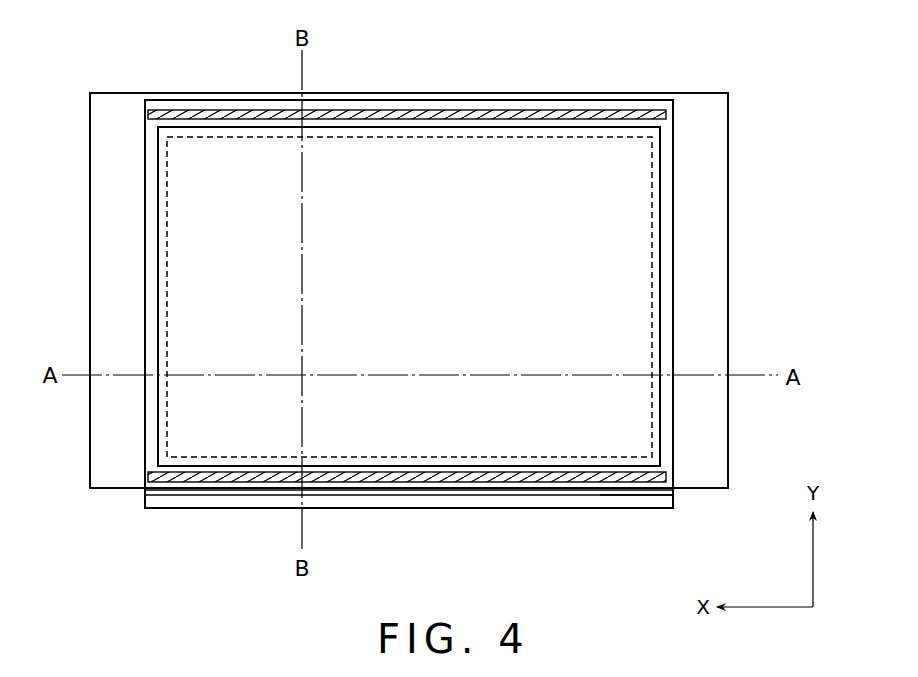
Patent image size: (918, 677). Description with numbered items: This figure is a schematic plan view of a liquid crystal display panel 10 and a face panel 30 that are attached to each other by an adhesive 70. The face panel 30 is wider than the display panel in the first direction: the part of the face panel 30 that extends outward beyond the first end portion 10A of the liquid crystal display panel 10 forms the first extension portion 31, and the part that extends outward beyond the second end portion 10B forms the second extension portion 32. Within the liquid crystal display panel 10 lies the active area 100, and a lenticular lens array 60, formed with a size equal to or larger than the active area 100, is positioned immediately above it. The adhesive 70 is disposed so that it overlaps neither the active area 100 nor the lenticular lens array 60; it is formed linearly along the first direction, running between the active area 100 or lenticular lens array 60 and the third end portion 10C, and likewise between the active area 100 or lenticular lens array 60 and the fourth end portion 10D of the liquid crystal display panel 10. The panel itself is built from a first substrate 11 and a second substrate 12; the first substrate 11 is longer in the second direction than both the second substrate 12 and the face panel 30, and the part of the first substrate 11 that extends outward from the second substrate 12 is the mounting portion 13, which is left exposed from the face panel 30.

The liquid crystal display panel 10 is at (675, 92).
The first end portion 10A is at (143, 147).
The second end portion 10B is at (687, 133).
The third end portion 10C is at (415, 98).
The fourth end portion 10D is at (403, 510).
The first substrate 11 is at (663, 509).
The second substrate 12 is at (670, 503).
The mounting portion 13 is at (628, 508).
The face panel 30 is at (728, 93).
The first extension portion 31 is at (115, 305).
The second extension portion 32 is at (710, 345).
The lenticular lens array 60 is at (661, 270).
The adhesive 70 is at (598, 111).
The active area 100 is at (654, 197).